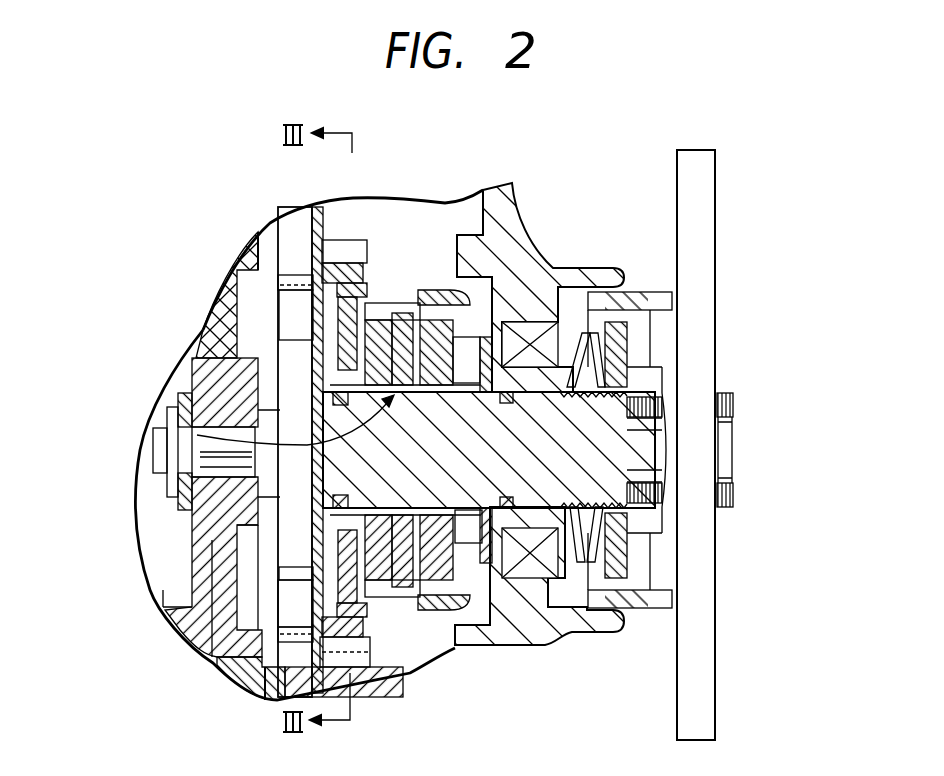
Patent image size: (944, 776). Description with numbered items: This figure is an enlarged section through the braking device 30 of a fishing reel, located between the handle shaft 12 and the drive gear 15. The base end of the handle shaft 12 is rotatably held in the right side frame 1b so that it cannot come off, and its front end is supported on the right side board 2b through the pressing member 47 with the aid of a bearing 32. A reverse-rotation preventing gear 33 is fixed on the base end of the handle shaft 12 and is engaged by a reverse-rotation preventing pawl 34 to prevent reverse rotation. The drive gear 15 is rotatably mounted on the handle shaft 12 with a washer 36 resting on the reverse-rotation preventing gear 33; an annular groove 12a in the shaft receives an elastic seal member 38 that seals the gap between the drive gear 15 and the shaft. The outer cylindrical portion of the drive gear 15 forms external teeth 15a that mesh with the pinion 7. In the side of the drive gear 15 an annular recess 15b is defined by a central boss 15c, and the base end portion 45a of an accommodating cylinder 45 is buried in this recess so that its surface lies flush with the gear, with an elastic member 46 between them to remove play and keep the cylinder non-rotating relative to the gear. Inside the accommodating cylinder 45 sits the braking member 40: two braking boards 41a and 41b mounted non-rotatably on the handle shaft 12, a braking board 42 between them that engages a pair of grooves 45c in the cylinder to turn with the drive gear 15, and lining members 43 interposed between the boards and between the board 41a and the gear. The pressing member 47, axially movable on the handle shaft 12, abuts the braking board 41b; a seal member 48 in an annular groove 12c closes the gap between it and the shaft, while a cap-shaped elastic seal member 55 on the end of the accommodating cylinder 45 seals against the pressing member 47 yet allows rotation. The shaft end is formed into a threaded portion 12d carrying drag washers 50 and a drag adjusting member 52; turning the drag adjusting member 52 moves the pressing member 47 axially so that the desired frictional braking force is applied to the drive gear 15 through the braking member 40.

The right side frame 1b is at (230, 267).
The right side board 2b is at (523, 247).
The pinion 7 is at (287, 677).
The handle shaft 12 is at (615, 447).
The annular groove 12a is at (313, 370).
The annular groove 12c is at (640, 512).
The threaded portion 12d is at (640, 372).
The drive gear 15 is at (382, 275).
The external teeth 15a is at (353, 253).
The annular recess 15b is at (265, 293).
The central boss 15c is at (283, 305).
The braking device 30 is at (674, 385).
The bearing 32 is at (600, 313).
The reverse-rotation preventing gear 33 is at (278, 340).
The reverse-rotation preventing pawl 34 is at (293, 233).
The washer 36 is at (275, 600).
The elastic seal member 38 is at (158, 450).
The braking member 40 is at (175, 420).
The braking board 41a is at (400, 617).
The braking board 41b is at (505, 640).
The braking board 42 is at (460, 560).
The lining members 43 is at (245, 560).
The accommodating cylinder 45 is at (410, 337).
The base end portion 45a is at (290, 525).
The grooves 45c is at (380, 685).
The elastic member 46 is at (253, 640).
The pressing member 47 is at (583, 580).
The seal member 48 is at (640, 475).
The drag washers 50 is at (603, 338).
The drag adjusting member 52 is at (705, 200).
The cap-shaped elastic seal member 55 is at (515, 300).